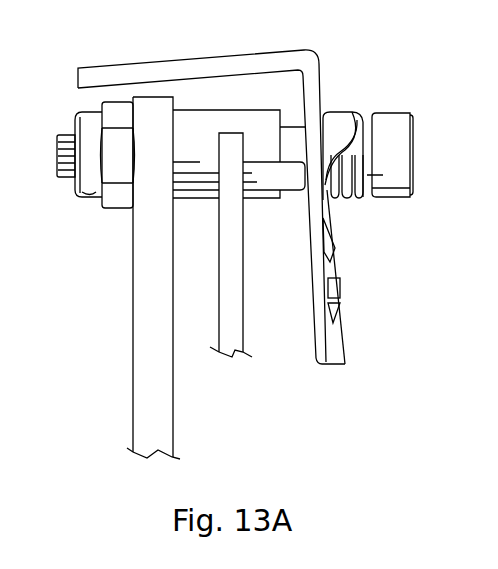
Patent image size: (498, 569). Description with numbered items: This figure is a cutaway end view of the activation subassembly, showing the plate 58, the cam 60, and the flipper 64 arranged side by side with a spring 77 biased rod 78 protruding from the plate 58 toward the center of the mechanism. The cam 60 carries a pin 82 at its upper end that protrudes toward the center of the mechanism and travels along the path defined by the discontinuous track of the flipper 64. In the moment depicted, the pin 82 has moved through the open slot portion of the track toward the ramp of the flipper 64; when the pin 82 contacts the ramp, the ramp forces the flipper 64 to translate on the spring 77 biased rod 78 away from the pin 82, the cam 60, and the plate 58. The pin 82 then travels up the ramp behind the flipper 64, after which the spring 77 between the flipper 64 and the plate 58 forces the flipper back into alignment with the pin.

The plate 58 is at (140, 288).
The cam 60 is at (238, 305).
The flipper 64 is at (205, 62).
The spring 77 is at (355, 200).
The spring biased rod 78 is at (400, 120).
The pin 82 is at (292, 192).